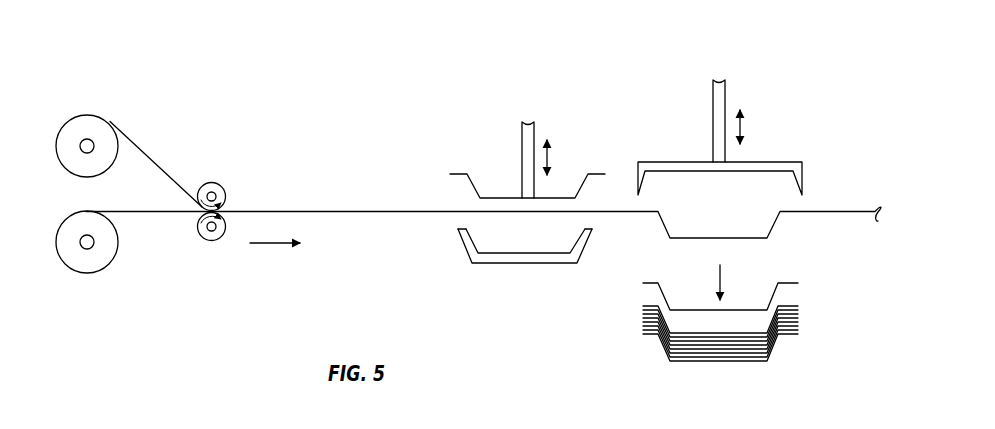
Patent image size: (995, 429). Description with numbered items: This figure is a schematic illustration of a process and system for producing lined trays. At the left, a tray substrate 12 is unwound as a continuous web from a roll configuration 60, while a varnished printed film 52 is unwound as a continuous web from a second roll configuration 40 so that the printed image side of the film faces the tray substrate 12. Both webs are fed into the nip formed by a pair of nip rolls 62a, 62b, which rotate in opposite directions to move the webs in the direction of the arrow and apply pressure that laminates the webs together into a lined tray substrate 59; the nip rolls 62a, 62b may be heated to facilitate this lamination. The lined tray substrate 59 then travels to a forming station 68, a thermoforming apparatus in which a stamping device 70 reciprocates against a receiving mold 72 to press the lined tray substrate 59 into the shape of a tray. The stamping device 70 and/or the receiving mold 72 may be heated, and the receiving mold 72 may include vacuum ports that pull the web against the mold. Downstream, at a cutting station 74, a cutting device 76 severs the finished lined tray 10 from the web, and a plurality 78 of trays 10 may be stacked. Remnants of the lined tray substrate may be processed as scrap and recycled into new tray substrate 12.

The lined tray 10 is at (804, 283).
The tray substrate 12 is at (120, 210).
The roll configuration 40 is at (87, 115).
The varnished printed film 52 is at (150, 157).
The lined tray substrate 59 is at (268, 210).
The roll configuration 60 is at (57, 253).
The nip roll 62a is at (213, 183).
The nip roll 62b is at (217, 242).
The forming station 68 is at (508, 148).
The stamping device 70 is at (595, 170).
The receiving mold 72 is at (525, 280).
The cutting station 74 is at (760, 119).
The cutting device 76 is at (782, 162).
The plurality of trays 78 is at (804, 328).